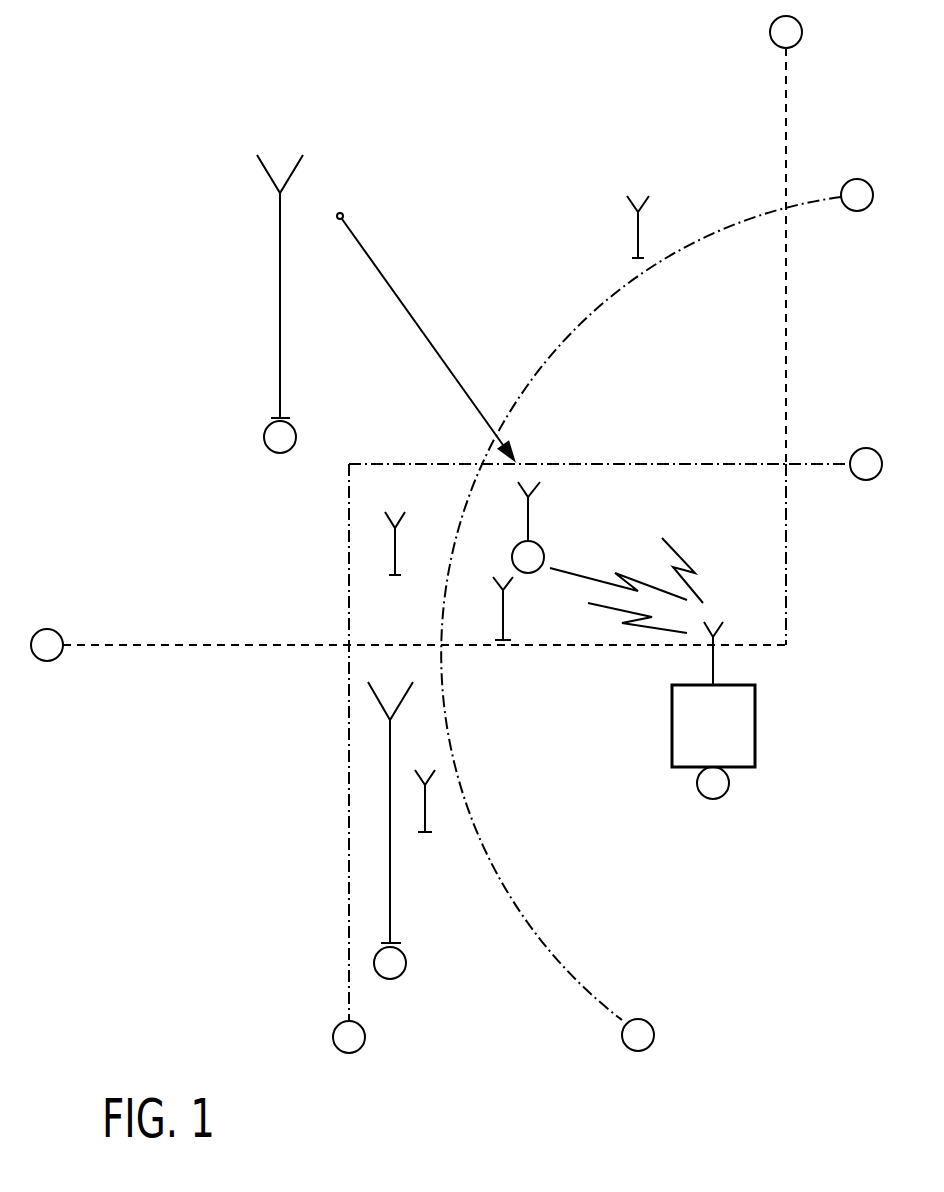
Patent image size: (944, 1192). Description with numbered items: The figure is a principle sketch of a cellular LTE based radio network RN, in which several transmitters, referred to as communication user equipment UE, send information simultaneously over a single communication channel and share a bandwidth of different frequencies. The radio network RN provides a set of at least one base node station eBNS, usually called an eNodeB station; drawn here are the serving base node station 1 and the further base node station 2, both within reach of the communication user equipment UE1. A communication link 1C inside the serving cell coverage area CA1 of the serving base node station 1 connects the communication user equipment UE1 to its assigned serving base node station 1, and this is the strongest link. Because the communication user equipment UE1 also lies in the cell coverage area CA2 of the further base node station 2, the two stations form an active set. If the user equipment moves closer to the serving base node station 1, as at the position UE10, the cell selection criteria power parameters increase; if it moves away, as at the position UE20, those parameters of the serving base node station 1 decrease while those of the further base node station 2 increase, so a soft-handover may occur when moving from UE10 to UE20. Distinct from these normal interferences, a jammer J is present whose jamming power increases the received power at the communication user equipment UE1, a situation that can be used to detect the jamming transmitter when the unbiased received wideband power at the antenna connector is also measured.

The radio network RN is at (264, 54).
The serving base node station 1 is at (416, 338).
The further base node station 2 is at (607, 750).
The communication link 1C is at (363, 250).
The base node station eBNS is at (280, 343).
The communication user equipment UE is at (640, 243).
The communication user equipment UE1 is at (530, 525).
The communication user equipment position UE10 is at (395, 542).
The communication user equipment position UE20 is at (425, 808).
The serving cell coverage area CA1 is at (555, 269).
The cell coverage area CA2 is at (730, 878).
The jammer J is at (657, 615).